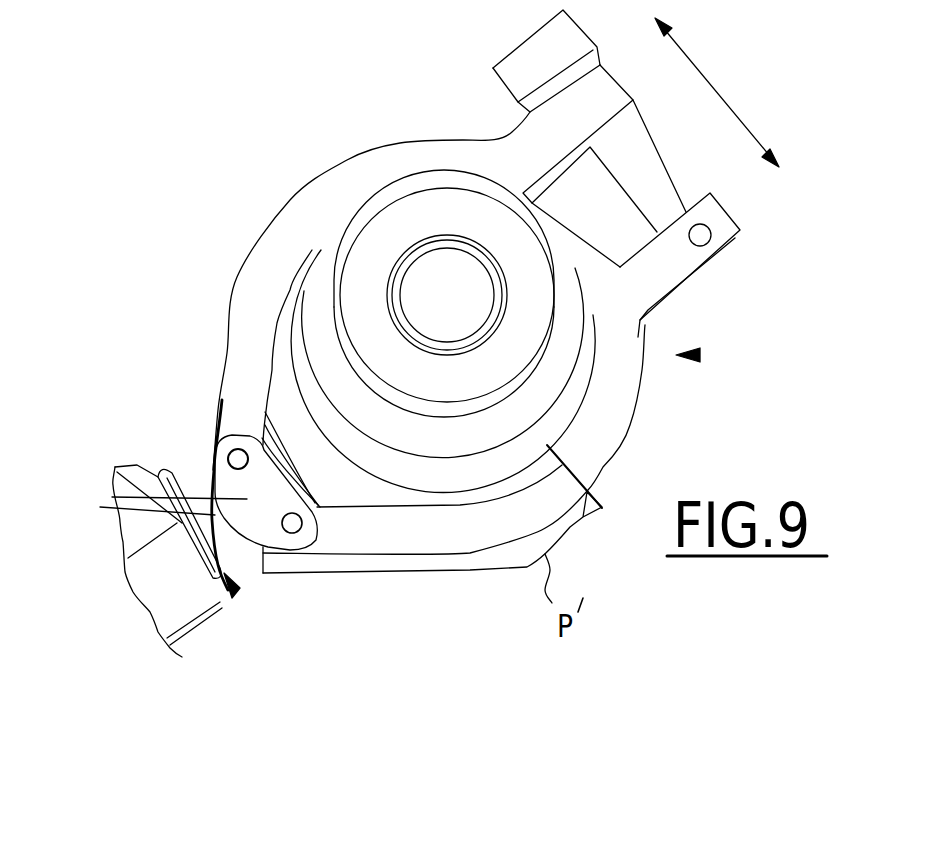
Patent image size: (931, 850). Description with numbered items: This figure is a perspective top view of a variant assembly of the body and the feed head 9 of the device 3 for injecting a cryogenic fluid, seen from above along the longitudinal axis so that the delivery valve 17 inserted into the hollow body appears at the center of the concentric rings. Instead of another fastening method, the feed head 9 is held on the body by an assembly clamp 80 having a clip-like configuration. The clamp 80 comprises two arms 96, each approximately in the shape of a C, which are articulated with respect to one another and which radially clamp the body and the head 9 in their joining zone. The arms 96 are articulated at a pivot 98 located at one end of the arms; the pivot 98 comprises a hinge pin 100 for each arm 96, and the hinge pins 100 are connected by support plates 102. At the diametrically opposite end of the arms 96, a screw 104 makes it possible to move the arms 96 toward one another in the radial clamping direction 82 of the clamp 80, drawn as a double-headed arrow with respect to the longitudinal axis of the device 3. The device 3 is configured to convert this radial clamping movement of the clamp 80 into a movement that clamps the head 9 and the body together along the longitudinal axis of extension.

The device 3 is at (324, 272).
The feed head 9 is at (318, 500).
The delivery valve 17 is at (434, 285).
The assembly clamp 80 is at (700, 355).
The radial clamping direction 82 is at (728, 100).
The arms 96 is at (347, 173).
The pivot 98 is at (223, 600).
The hinge pins 100 is at (236, 450).
The support plates 102 is at (112, 500).
The screw 104 is at (684, 184).